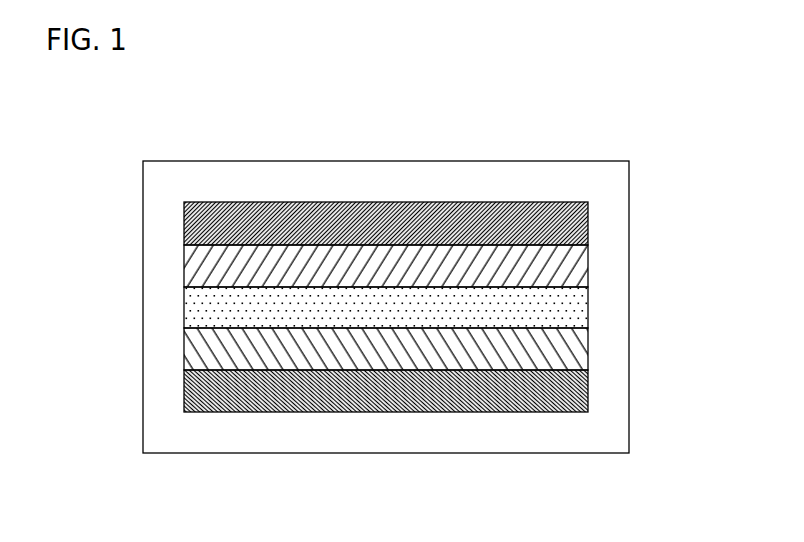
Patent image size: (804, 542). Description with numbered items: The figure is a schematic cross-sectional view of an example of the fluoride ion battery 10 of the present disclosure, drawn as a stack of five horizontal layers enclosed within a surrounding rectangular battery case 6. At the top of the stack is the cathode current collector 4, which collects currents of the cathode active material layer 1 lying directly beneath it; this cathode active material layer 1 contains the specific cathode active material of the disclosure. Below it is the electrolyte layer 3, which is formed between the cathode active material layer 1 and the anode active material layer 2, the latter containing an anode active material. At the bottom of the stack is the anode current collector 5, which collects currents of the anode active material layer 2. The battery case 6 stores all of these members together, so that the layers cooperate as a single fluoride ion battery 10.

The fluoride ion battery 10 is at (607, 141).
The battery case 6 is at (600, 190).
The cathode current collector 4 is at (567, 227).
The cathode active material layer 1 is at (560, 270).
The electrolyte layer 3 is at (560, 313).
The anode active material layer 2 is at (563, 351).
The anode current collector 5 is at (562, 392).